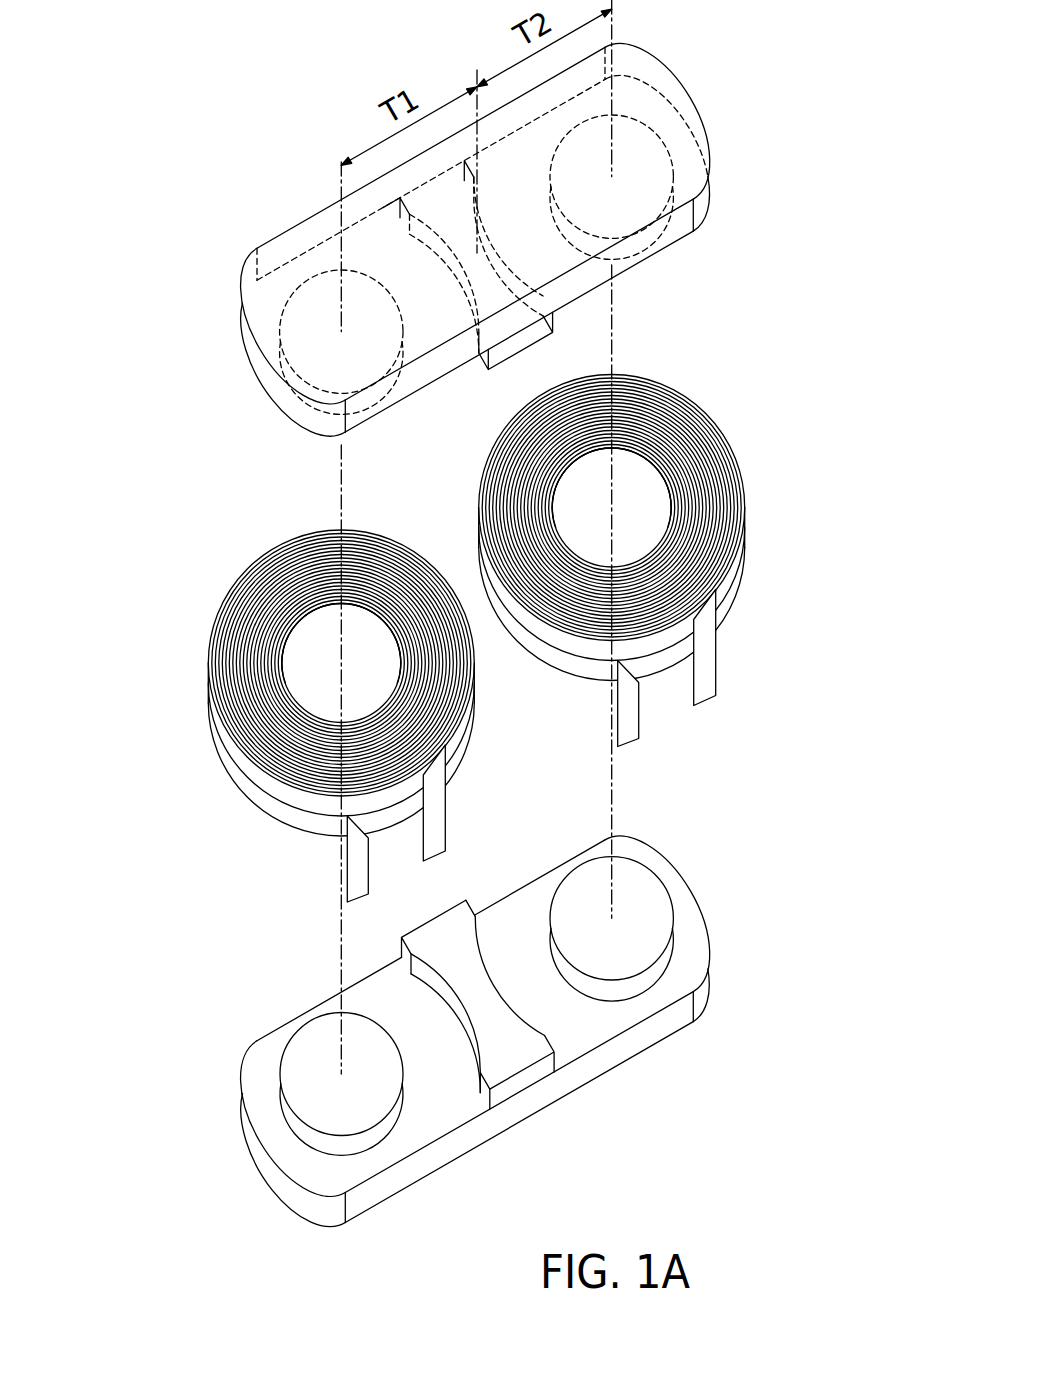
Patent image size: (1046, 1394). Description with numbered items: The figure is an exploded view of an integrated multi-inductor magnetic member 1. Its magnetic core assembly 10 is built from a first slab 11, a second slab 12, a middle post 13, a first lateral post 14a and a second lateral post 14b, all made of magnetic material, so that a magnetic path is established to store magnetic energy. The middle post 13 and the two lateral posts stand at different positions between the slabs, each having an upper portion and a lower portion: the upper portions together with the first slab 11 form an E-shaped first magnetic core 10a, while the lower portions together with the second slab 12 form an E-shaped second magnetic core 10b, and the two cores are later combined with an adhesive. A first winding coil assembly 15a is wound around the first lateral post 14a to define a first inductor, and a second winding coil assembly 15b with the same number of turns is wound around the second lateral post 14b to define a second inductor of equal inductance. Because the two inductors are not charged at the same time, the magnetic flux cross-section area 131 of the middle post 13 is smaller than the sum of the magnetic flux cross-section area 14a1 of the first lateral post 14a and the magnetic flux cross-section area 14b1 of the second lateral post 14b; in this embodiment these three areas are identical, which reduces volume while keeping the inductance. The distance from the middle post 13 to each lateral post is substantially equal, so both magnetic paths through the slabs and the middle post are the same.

The integrated multi-inductor magnetic member 1 is at (832, 34).
The magnetic core assembly 10 is at (135, 245).
The first magnetic core 10a is at (234, 275).
The second magnetic core 10b is at (236, 1048).
The first slab 11 is at (705, 190).
The second slab 12 is at (708, 992).
The middle post 13 is at (517, 340).
The magnetic flux cross-section area of the middle post 131 is at (450, 945).
The first lateral post 14a is at (367, 397).
The magnetic flux cross-section area of the first lateral post 14a1 is at (317, 1088).
The second lateral post 14b is at (638, 237).
The magnetic flux cross-section area of the second lateral post 14b1 is at (642, 910).
The first winding coil assembly 15a is at (285, 812).
The second winding coil assembly 15b is at (738, 604).